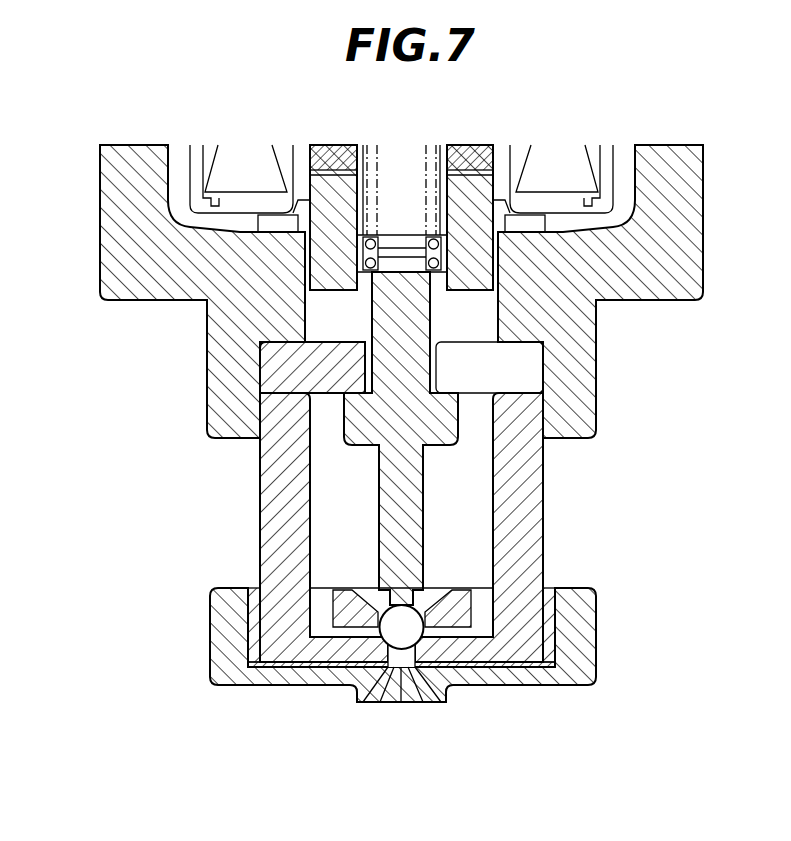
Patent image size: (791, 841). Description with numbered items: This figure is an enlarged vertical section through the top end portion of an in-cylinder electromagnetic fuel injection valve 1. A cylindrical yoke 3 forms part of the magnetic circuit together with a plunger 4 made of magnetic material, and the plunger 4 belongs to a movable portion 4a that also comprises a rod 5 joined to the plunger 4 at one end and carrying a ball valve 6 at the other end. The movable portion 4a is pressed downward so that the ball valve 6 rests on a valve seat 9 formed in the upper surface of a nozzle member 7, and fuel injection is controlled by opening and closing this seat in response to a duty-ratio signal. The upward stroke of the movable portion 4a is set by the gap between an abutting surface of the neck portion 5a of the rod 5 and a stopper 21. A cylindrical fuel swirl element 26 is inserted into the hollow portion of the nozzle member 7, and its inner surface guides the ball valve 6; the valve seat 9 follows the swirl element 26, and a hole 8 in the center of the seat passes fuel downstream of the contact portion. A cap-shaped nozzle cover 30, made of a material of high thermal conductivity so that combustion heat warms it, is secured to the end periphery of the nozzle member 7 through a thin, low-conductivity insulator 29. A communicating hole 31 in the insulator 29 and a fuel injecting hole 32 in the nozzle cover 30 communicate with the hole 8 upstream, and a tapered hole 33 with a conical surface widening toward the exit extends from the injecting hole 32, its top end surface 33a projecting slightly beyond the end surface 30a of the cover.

The electromagnetic fuel injection valve 1 is at (433, 145).
The cylindrical yoke 3 is at (100, 269).
The plunger 4 is at (322, 277).
The movable portion 4a is at (468, 507).
The rod 5 is at (440, 438).
The neck portion 5a is at (450, 410).
The ball valve 6 is at (410, 618).
The nozzle member 7 is at (533, 565).
The hole 8 is at (358, 697).
The valve seat 9 is at (395, 716).
The stopper 21 is at (273, 382).
The cylindrical fuel swirl element 26 is at (340, 602).
The insulator 29 is at (257, 602).
The nozzle cover 30 is at (369, 670).
The end surface 30a is at (243, 687).
The communicating hole 31 is at (417, 703).
The fuel injecting hole 32 is at (385, 703).
The tapered hole 33 is at (378, 703).
The top end surface 33a is at (365, 703).